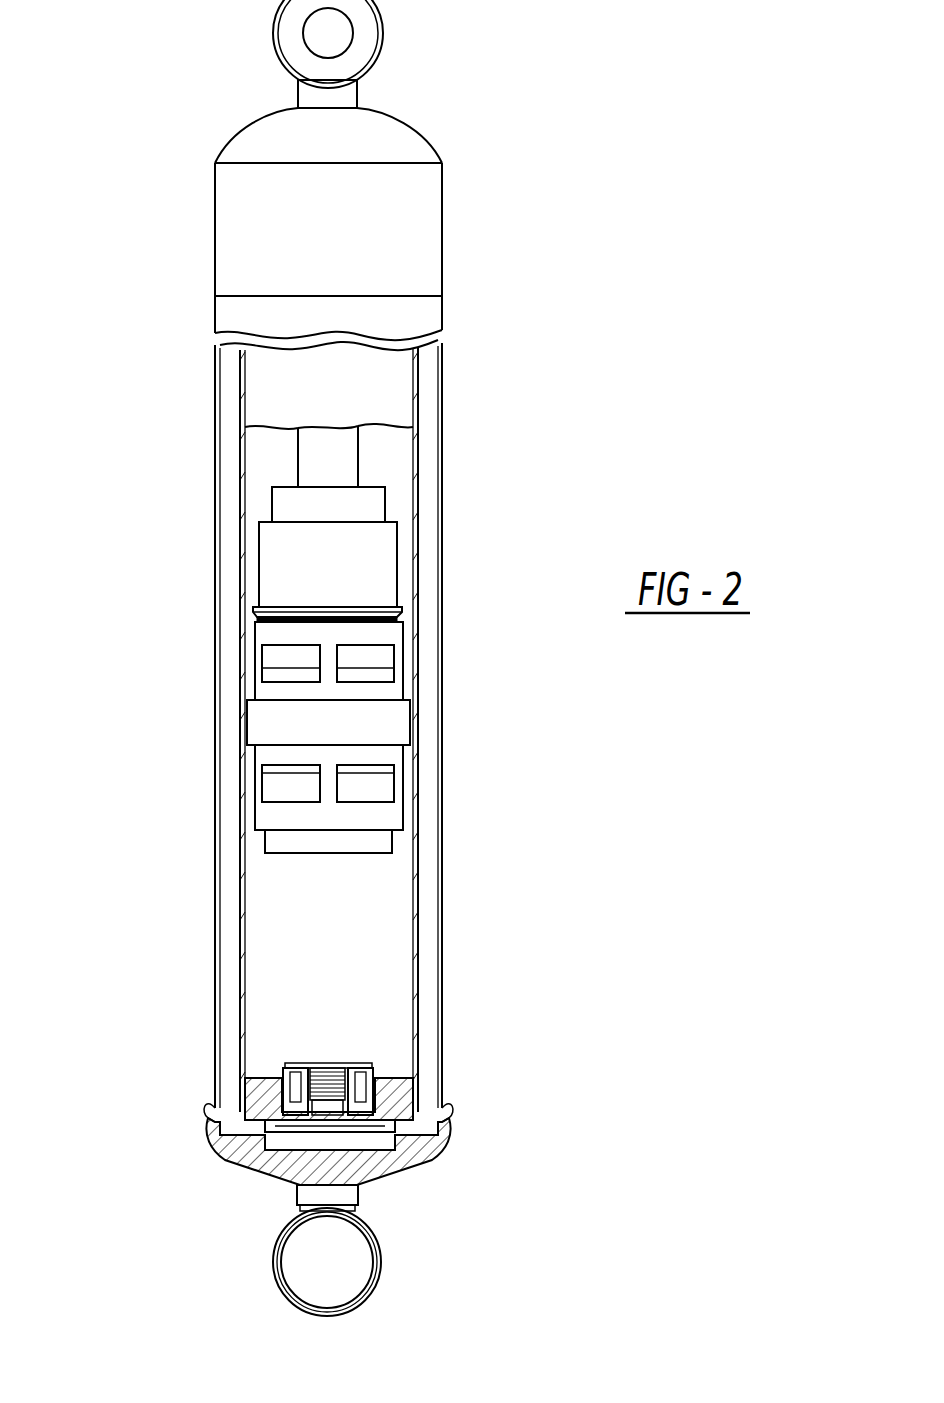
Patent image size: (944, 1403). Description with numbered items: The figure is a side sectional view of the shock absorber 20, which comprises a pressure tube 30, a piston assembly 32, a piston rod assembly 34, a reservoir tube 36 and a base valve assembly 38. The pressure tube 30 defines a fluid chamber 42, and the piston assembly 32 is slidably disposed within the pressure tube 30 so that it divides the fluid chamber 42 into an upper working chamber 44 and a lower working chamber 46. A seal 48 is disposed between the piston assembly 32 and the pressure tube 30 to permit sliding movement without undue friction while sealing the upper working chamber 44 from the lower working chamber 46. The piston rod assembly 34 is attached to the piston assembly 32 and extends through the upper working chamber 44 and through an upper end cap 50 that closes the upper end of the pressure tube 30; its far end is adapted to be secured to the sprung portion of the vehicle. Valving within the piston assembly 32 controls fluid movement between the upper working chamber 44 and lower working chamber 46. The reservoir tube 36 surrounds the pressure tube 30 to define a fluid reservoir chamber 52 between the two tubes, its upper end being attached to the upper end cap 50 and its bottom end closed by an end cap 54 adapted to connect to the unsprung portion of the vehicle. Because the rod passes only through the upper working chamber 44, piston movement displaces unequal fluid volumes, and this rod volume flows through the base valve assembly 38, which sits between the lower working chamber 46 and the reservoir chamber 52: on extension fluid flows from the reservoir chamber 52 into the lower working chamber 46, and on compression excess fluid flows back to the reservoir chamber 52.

The shock absorber 20 is at (537, 114).
The pressure tube 30 is at (418, 893).
The piston assembly 32 is at (374, 716).
The piston rod assembly 34 is at (336, 464).
The reservoir tube 36 is at (443, 809).
The base valve assembly 38 is at (387, 1083).
The fluid chamber 42 is at (331, 907).
The upper working chamber 44 is at (263, 479).
The lower working chamber 46 is at (322, 973).
The seal 48 is at (310, 717).
The upper end cap 50 is at (295, 143).
The fluid reservoir chamber 52 is at (230, 808).
The end cap 54 is at (420, 1142).